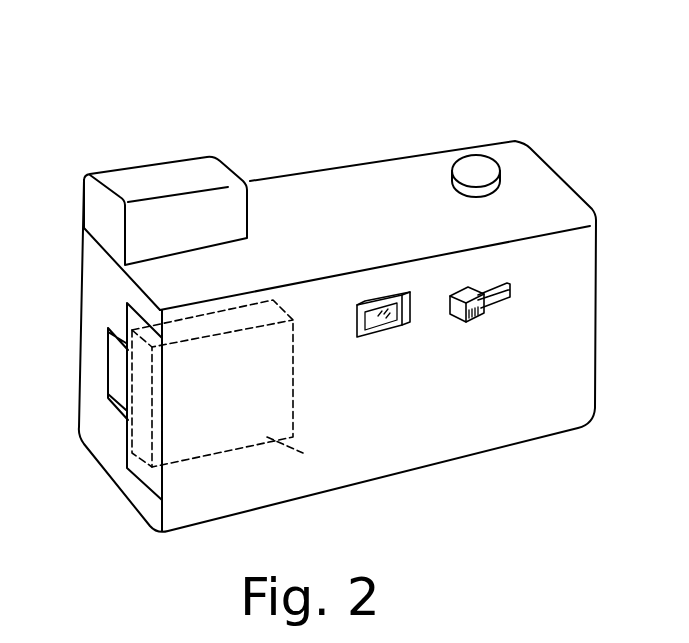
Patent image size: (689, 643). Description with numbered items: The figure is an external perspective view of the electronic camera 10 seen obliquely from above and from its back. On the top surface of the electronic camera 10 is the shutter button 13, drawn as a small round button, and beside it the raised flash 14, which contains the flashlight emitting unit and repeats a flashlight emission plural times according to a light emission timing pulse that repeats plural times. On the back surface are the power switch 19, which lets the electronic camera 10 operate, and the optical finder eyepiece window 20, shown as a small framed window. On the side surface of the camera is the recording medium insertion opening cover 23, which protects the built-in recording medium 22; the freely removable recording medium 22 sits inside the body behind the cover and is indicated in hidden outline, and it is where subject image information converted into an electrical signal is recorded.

The electronic camera 10 is at (333, 120).
The shutter button 13 is at (472, 170).
The flash 14 is at (168, 175).
The power switch 19 is at (470, 296).
The optical finder eyepiece window 20 is at (387, 302).
The recording medium 22 is at (262, 425).
The recording medium insertion opening cover 23 is at (127, 445).